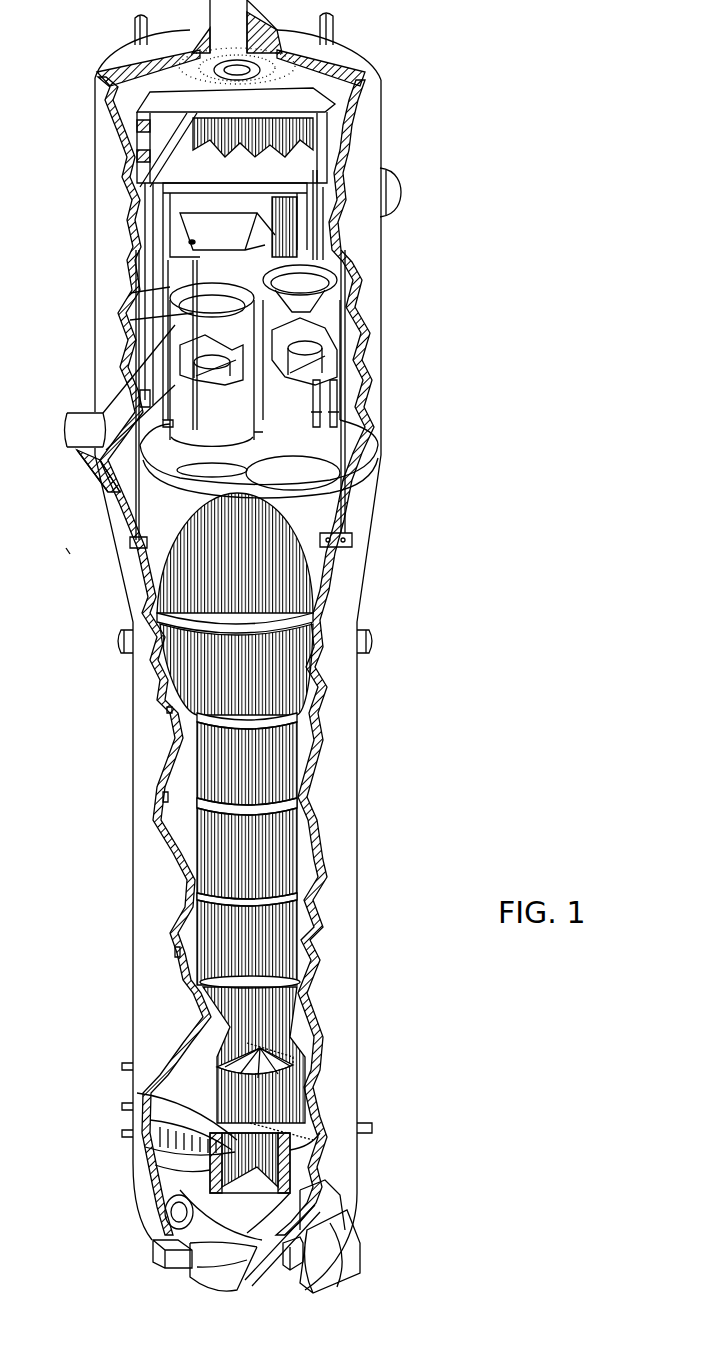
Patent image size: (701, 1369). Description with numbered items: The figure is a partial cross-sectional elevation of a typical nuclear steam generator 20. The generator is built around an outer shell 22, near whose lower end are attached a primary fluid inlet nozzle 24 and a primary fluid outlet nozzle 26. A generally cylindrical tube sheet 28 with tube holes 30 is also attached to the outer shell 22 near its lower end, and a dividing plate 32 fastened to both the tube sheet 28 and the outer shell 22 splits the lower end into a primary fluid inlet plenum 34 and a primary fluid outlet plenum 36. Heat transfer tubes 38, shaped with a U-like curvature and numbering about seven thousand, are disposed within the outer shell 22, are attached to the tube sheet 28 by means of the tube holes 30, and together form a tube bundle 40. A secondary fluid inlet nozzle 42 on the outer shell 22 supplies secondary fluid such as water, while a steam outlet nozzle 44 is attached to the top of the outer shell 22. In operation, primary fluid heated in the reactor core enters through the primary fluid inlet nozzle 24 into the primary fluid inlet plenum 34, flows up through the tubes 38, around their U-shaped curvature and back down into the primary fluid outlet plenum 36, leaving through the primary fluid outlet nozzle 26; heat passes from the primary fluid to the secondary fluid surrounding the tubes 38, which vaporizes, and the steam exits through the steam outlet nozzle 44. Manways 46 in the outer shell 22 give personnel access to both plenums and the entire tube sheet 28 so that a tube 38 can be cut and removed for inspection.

The nuclear steam generator 20 is at (443, 402).
The outer shell 22 is at (106, 209).
The primary fluid inlet nozzle 24 is at (347, 1263).
The primary fluid outlet nozzle 26 is at (197, 1278).
The tube sheet 28 is at (160, 1162).
The tube holes 30 is at (300, 1177).
The dividing plate 32 is at (260, 1230).
The primary fluid inlet plenum 34 is at (313, 1197).
The primary fluid outlet plenum 36 is at (153, 1207).
The tubes 38 is at (273, 861).
The tube bundle 40 is at (272, 745).
The secondary fluid inlet nozzle 42 is at (96, 455).
The steam outlet nozzle 44 is at (262, 27).
The manways 46 is at (157, 1232).